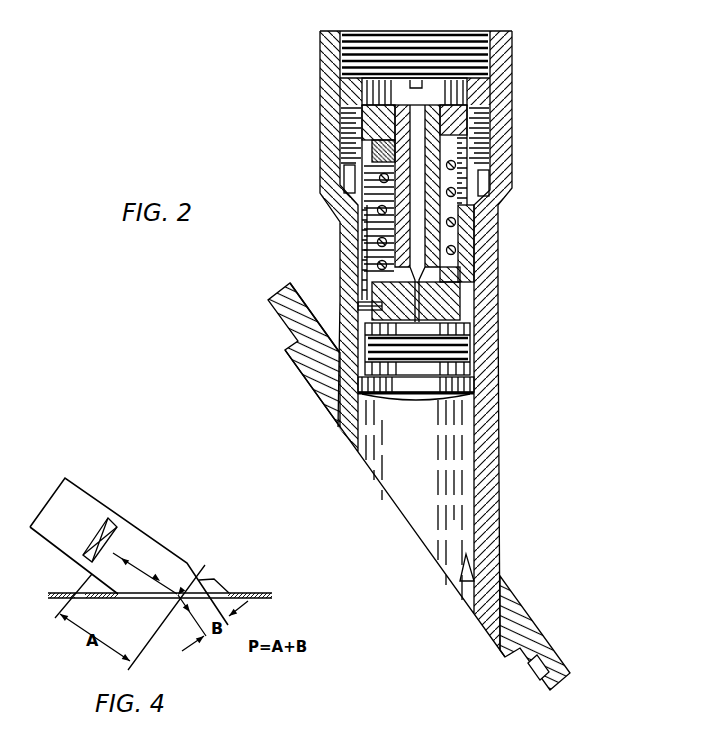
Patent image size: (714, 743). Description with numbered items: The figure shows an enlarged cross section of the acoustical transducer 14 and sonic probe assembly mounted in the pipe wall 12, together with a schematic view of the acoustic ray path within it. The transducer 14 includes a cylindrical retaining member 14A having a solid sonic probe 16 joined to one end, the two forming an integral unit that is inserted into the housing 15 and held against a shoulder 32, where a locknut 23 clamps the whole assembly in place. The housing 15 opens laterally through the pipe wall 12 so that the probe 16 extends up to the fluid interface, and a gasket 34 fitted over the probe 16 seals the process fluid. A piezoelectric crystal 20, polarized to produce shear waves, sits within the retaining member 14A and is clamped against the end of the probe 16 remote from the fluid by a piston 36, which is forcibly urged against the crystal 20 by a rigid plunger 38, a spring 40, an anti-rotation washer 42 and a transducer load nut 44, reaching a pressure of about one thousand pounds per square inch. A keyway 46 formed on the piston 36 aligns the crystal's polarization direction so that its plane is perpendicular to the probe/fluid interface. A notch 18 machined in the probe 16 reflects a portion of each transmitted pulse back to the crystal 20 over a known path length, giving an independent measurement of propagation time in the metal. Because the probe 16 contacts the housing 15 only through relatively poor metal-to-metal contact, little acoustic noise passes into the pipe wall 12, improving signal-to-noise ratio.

The plate / workpiece 12 is at (550, 643).
The upstream acoustical transducer 14 is at (503, 228).
The cylindrical retaining member 14A is at (470, 260).
The housing 15 is at (512, 139).
The sonic probe 16 is at (442, 488).
The notch 18 is at (470, 573).
The piezoelectric crystal 20 is at (470, 338).
The locknut 23 is at (490, 104).
The shoulder 32 is at (495, 430).
The gasket 34 is at (478, 390).
The piston 36 is at (342, 288).
The rigid plunger 38 is at (342, 247).
The spring 40 is at (342, 200).
The anti-rotation washer 42 is at (345, 143).
The transducer load nut 44 is at (345, 106).
The keyway 46 is at (336, 348).